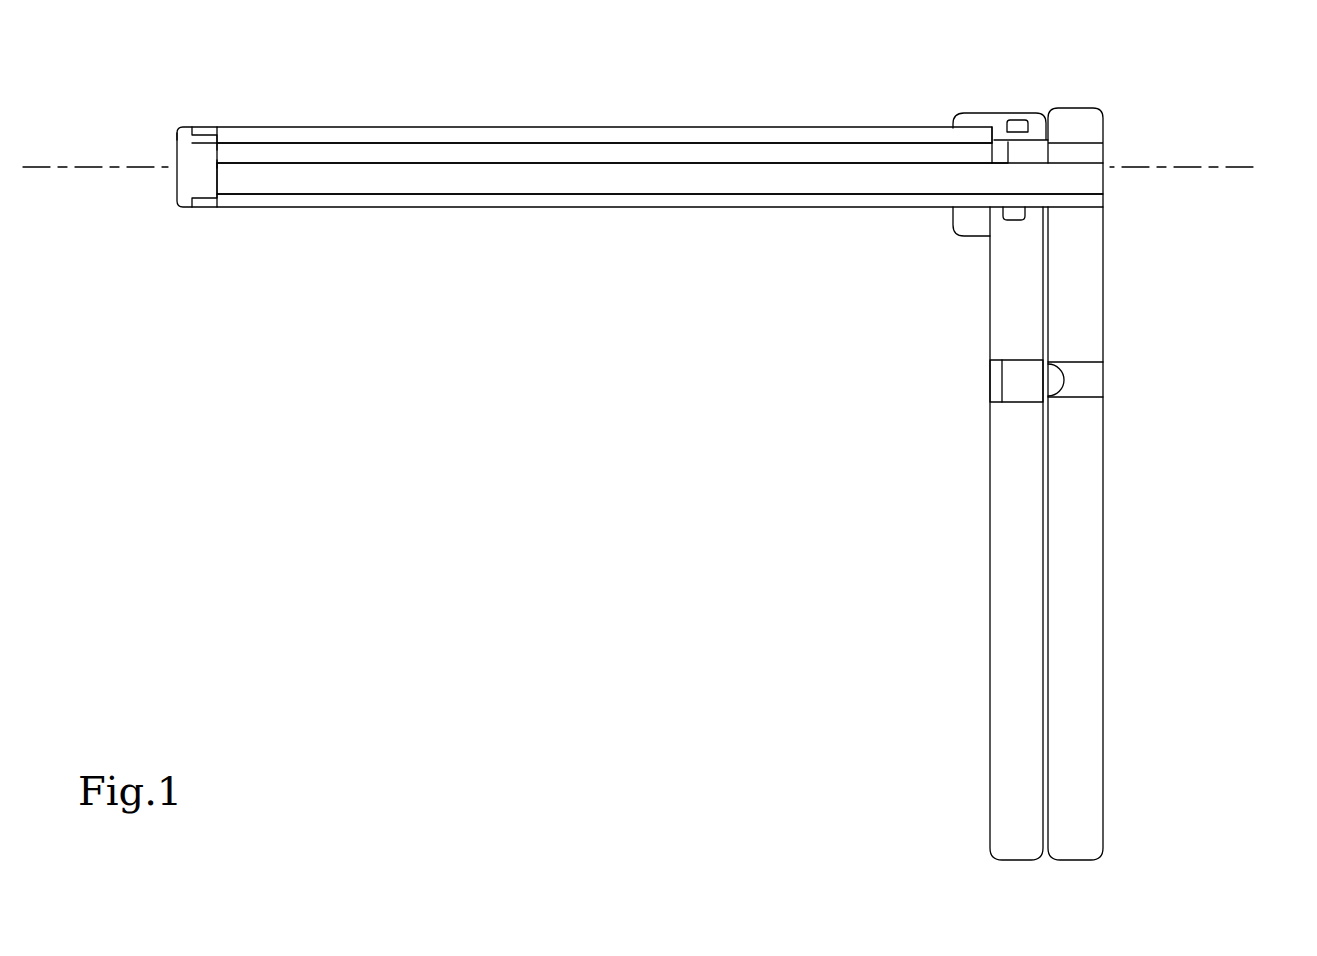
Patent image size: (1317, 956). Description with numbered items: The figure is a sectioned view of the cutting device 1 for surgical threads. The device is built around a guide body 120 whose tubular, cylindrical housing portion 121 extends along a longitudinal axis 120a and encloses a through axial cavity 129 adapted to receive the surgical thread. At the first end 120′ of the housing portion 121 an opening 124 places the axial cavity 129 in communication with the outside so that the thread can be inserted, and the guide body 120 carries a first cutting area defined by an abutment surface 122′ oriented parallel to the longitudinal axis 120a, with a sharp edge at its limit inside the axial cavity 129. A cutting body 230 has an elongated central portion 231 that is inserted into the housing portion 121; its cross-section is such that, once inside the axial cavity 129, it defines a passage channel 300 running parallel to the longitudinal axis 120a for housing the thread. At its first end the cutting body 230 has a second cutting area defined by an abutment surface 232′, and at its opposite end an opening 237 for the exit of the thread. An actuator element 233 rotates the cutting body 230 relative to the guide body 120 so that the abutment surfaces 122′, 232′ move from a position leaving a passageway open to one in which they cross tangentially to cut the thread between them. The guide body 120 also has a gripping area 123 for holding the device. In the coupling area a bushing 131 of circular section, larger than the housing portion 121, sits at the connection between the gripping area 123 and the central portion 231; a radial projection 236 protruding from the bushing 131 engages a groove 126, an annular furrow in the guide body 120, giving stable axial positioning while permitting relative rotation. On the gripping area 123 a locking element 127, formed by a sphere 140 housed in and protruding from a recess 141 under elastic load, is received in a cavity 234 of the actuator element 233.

The display device 1 is at (550, 580).
The guide body 120 is at (647, 167).
The first end 120′ is at (176, 131).
The longitudinal axis 120a is at (1193, 166).
The housing portion 121 is at (562, 128).
The abutment surface 122′ is at (218, 146).
The gripping area 123 is at (929, 533).
The opening 124 is at (190, 155).
The groove 126 is at (1018, 125).
The locking element 127 is at (1025, 407).
The axial cavity 129 is at (400, 150).
The bushing 131 is at (985, 120).
The sphere 140 is at (1058, 388).
The recess 141 is at (1020, 382).
The cutting body 230 is at (1048, 433).
The central portion 231 is at (622, 178).
The abutment surface 232′ is at (218, 164).
The actuator element 233 is at (1152, 533).
The cavity 234 is at (1092, 380).
The radial projection 236 is at (1012, 224).
The opening 237 is at (1090, 152).
The passage channel 300 is at (790, 150).